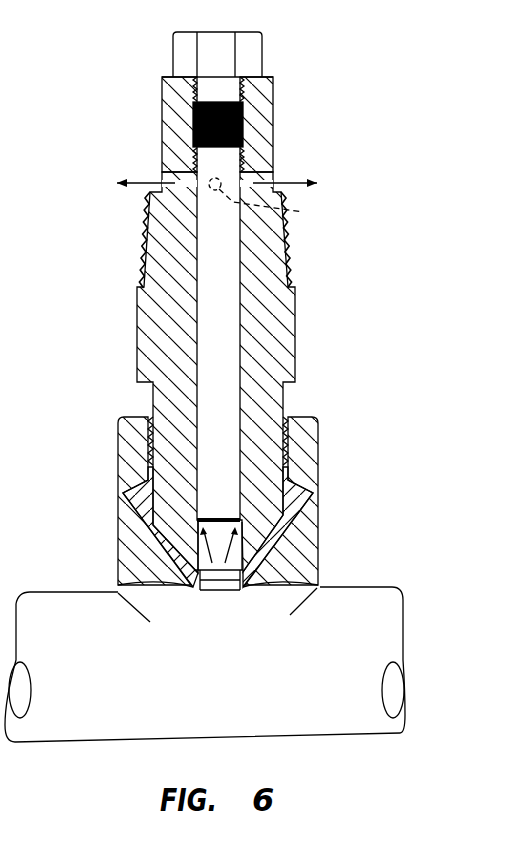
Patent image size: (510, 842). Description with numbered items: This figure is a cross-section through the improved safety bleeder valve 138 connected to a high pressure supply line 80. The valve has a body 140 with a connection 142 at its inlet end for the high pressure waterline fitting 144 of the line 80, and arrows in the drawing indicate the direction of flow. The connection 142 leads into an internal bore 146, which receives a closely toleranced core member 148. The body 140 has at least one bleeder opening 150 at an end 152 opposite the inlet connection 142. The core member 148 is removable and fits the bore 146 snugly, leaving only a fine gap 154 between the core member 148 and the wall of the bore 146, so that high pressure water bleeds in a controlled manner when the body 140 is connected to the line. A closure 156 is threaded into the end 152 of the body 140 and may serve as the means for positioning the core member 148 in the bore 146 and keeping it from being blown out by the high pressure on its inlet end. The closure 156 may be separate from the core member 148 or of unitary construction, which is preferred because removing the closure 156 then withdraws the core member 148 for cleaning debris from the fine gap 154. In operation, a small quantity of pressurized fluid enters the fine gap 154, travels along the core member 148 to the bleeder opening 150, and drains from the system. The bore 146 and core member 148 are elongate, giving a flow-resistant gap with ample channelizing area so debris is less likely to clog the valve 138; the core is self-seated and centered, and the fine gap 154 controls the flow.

The line 80 is at (102, 674).
The safety bleeder valve 138 is at (203, 324).
The body 140 is at (296, 333).
The connection 142 is at (262, 520).
The high pressure waterline fitting 144 is at (118, 558).
The internal bore 146 is at (210, 592).
The core member 148 is at (222, 410).
The bleeder opening 150 is at (273, 181).
The end 152 is at (275, 98).
The fine gap 154 is at (196, 316).
The closure 156 is at (263, 38).